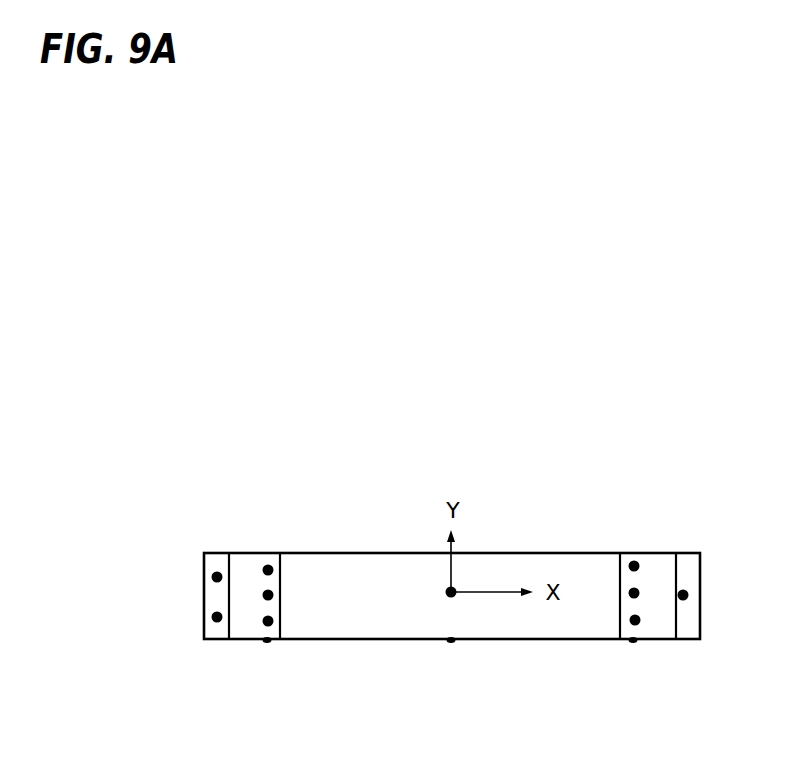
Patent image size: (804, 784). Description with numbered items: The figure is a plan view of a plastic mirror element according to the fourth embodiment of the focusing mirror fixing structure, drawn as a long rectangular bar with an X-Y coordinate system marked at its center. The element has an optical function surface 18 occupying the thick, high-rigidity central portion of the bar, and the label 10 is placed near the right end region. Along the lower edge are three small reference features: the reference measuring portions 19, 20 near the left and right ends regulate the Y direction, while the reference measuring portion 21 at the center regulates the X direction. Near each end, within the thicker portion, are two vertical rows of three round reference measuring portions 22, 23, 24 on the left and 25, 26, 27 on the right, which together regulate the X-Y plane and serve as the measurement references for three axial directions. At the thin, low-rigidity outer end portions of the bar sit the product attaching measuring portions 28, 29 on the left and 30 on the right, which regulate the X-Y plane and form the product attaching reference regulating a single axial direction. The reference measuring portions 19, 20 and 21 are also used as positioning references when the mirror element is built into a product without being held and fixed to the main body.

The substrate end region 10 is at (601, 596).
The optical function surface 18 is at (410, 565).
The reference measuring portion 19 is at (268, 642).
The reference measuring portion 20 is at (633, 642).
The reference measuring portion 21 is at (451, 642).
The reference measuring portion 22 is at (269, 566).
The reference measuring portion 23 is at (267, 591).
The reference measuring portion 24 is at (266, 617).
The reference measuring portion 25 is at (632, 562).
The reference measuring portion 26 is at (635, 589).
The reference measuring portion 27 is at (637, 616).
The product attaching measuring portion 28 is at (212, 577).
The product attaching measuring portion 29 is at (213, 620).
The product attaching measuring portion 30 is at (688, 595).